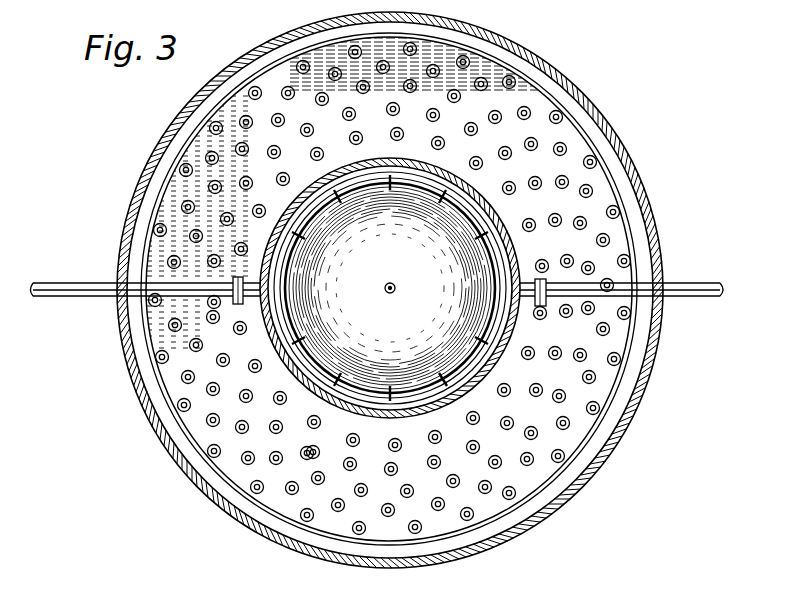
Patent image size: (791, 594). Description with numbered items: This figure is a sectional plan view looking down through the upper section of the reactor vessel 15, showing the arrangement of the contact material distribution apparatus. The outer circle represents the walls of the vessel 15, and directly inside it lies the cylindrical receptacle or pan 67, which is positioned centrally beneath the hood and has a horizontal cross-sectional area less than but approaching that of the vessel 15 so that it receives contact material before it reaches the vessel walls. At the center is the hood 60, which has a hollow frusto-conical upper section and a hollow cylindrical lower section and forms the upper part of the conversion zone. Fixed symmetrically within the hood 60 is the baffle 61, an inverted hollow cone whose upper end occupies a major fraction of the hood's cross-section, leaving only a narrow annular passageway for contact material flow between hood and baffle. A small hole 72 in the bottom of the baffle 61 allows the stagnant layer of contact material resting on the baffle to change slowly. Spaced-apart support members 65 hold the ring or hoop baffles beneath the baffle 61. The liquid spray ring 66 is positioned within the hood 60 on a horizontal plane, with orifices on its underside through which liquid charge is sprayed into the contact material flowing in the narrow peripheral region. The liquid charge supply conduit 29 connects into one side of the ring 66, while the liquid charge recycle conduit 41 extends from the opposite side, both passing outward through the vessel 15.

The reactor vessel 15 is at (173, 120).
The cylindrical receptacle or pan 67 is at (232, 106).
The baffle 61 is at (407, 217).
The hood 60 is at (498, 222).
The support members 65 is at (480, 241).
The small hole 72 is at (391, 294).
The liquid spray ring 66 is at (345, 402).
The liquid charge recycle conduit 41 is at (78, 284).
The liquid charge supply conduit 29 is at (713, 268).